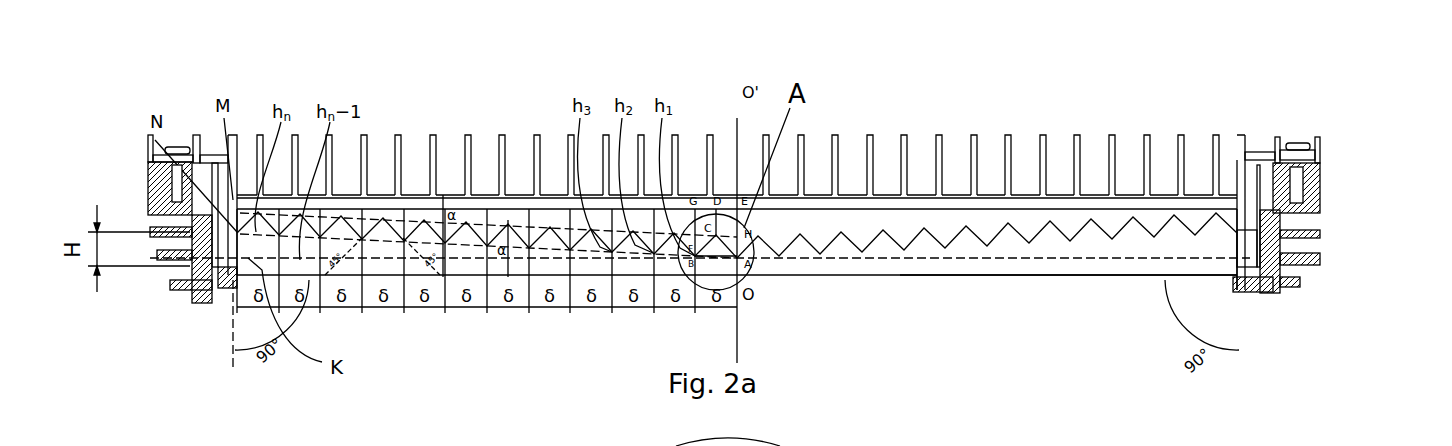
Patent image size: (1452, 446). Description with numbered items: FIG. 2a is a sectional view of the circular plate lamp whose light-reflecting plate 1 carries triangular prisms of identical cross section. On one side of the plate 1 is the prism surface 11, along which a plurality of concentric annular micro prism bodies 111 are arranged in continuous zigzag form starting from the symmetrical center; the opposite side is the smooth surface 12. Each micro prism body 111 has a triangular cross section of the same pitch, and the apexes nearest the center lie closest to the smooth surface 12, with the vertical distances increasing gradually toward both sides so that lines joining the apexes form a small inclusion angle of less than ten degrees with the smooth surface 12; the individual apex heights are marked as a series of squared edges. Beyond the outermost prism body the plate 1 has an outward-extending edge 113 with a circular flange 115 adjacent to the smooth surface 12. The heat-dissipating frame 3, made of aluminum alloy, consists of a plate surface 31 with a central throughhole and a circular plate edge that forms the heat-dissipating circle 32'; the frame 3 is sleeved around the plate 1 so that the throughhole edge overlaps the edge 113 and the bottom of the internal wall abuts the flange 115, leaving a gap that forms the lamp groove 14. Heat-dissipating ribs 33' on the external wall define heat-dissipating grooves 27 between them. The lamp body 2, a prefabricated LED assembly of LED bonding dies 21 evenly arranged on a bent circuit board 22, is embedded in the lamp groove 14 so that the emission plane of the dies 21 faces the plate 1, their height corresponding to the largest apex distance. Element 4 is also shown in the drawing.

The light-reflecting plate 1 is at (838, 257).
The prism surface 11 is at (952, 216).
The micro prism body 111 is at (1173, 230).
The outward-extending edge 113 is at (1245, 212).
The smooth surface 12 is at (1012, 277).
The lamp groove 14 is at (1245, 237).
The lamp body 2 is at (1242, 243).
The LED bonding die 21 is at (1235, 285).
The circuit board 22 is at (1247, 273).
The heat-dissipating groove 27 is at (166, 246).
The heat-dissipating frame 3 is at (1330, 222).
The plate surface 31 is at (1295, 280).
The heat-dissipating circle 32' is at (1319, 297).
The heat-dissipating rib 33' is at (1348, 252).
The top bracket 4 is at (1318, 143).
The circular flange 115 is at (197, 290).